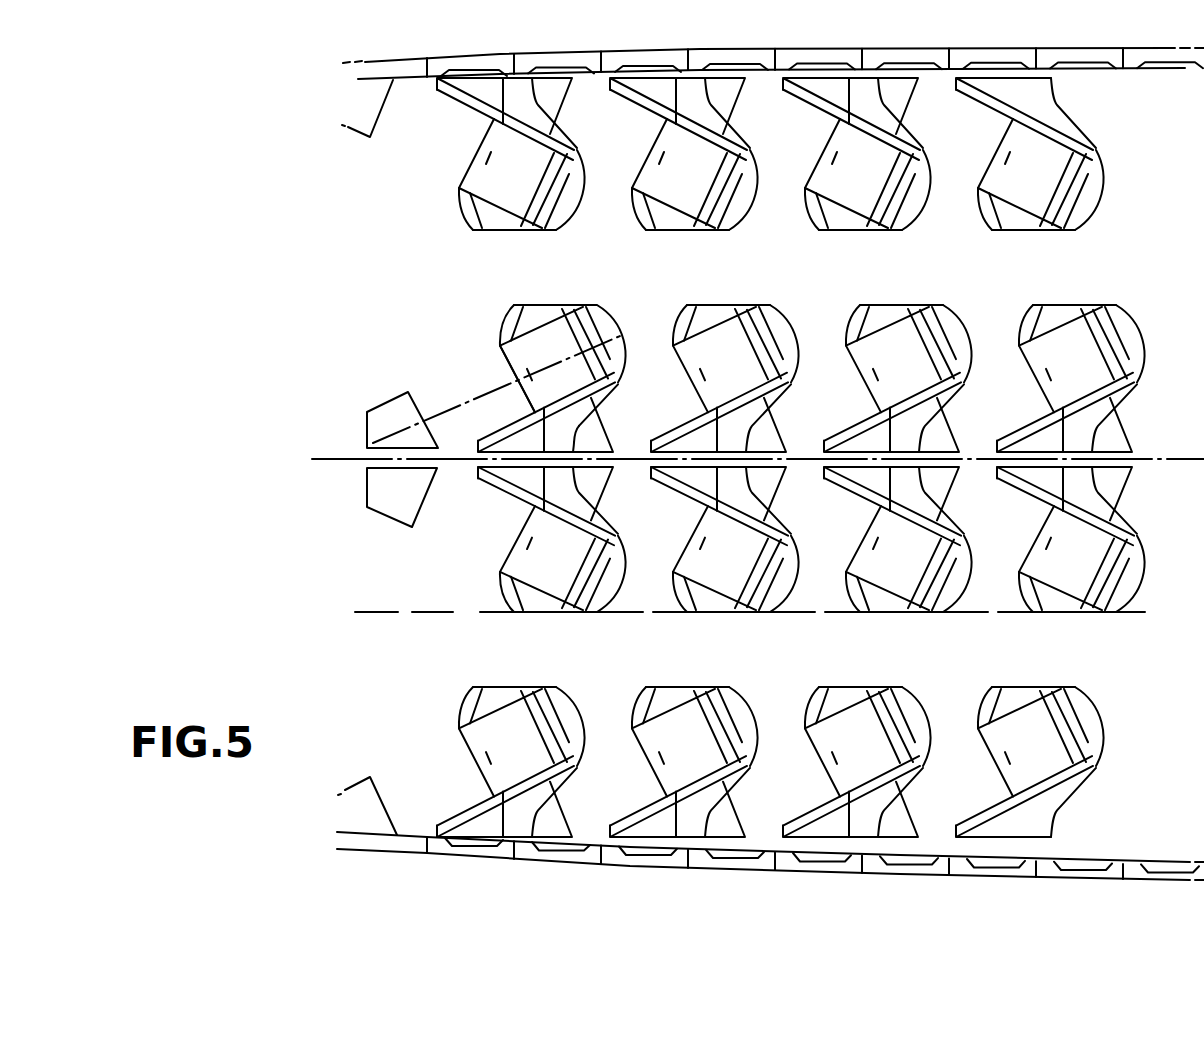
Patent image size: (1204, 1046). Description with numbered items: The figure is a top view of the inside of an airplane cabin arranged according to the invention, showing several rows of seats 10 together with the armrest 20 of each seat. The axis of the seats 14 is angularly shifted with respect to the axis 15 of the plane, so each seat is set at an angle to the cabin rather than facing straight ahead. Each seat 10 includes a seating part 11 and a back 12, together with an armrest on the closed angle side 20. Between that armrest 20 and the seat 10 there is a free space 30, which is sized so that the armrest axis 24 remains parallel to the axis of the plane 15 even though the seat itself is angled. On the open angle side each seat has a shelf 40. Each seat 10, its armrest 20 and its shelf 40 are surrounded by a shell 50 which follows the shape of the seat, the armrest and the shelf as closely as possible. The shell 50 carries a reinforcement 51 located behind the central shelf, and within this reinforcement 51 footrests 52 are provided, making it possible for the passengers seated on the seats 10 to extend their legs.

The seat 10 is at (607, 303).
The seating part 11 is at (497, 356).
The back 12 is at (618, 338).
The axis of the seats 14 is at (456, 405).
The axis of the plane 15 is at (330, 455).
The armrest on the closed angle side 20 is at (543, 300).
The armrest axis 24 is at (367, 611).
The free space 30 is at (511, 302).
The shelf 40 is at (513, 419).
The shell 50 is at (606, 400).
The reinforcement 51 is at (607, 421).
The footrests 52 is at (611, 445).